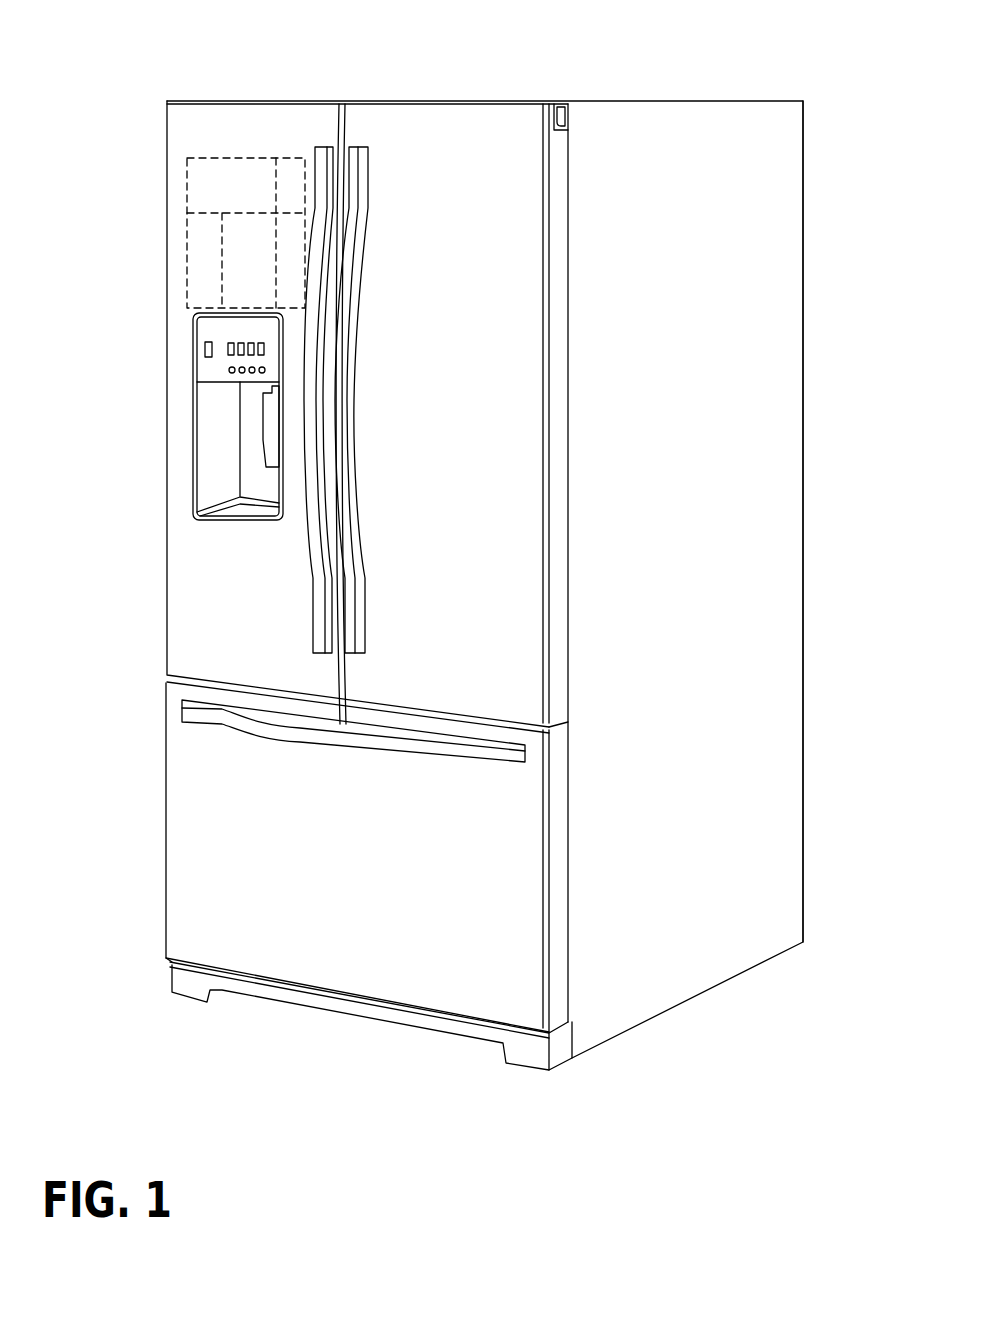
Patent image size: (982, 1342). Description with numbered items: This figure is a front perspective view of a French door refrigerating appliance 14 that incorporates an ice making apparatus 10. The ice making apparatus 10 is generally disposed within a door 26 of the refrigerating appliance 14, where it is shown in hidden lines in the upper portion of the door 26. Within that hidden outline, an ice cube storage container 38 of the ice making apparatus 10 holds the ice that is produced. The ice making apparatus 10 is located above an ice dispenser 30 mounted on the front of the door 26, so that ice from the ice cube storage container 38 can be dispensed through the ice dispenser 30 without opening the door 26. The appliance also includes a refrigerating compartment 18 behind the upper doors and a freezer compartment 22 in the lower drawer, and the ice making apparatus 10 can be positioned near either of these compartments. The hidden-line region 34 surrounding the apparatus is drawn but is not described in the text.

The ice making apparatus 10 is at (178, 262).
The refrigerating appliance 14 is at (665, 95).
The refrigerating compartment 18 is at (740, 335).
The freezer compartment 22 is at (235, 823).
The door 26 is at (197, 576).
The ice dispenser 30 is at (225, 428).
The ice maker housing 34 is at (186, 176).
The ice cube storage container 38 is at (240, 242).